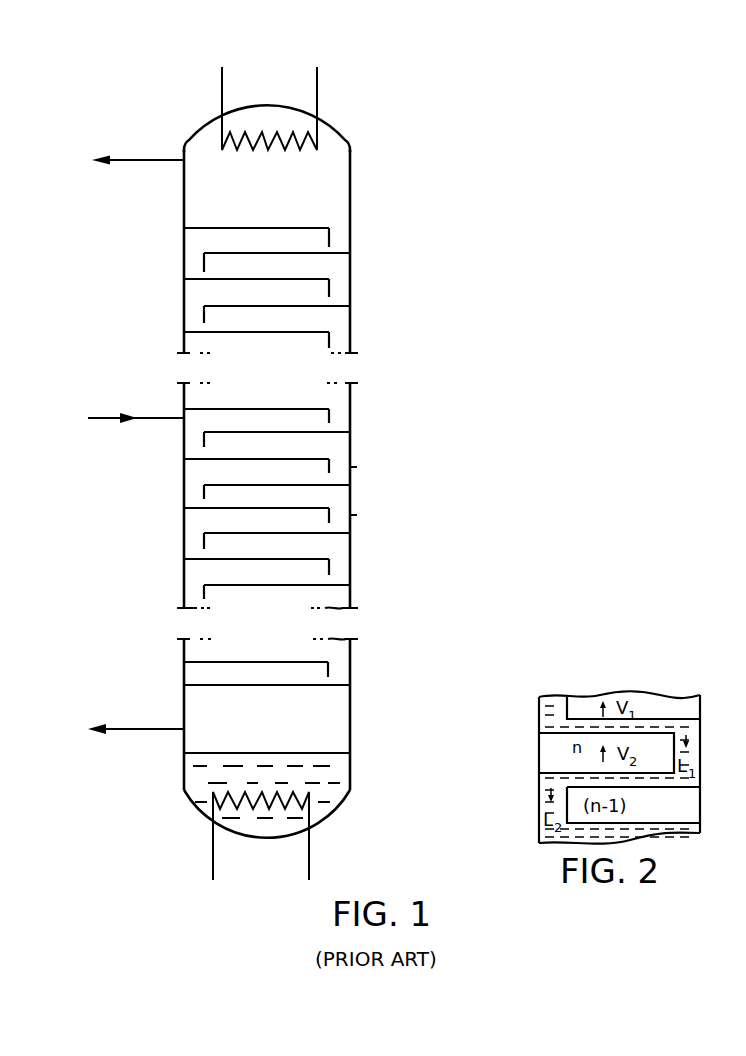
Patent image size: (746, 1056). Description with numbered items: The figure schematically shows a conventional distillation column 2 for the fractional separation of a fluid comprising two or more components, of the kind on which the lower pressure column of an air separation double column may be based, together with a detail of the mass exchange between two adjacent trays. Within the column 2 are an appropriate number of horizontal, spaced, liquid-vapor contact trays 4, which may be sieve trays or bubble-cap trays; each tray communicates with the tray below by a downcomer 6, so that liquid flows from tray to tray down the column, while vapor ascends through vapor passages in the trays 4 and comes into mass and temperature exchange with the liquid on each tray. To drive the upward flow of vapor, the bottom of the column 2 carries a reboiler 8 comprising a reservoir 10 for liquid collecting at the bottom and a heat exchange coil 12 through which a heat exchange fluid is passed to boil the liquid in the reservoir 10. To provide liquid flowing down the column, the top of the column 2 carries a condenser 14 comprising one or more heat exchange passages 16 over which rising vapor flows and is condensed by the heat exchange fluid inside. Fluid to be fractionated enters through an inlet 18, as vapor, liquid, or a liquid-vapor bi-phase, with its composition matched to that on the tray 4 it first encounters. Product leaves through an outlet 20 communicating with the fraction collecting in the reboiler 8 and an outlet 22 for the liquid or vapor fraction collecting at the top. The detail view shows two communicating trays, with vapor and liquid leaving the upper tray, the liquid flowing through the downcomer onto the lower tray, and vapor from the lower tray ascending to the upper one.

The distillation column 2 is at (140, 550).
The liquid-vapor contact trays 4 is at (228, 257).
The downcomer 6 is at (335, 285).
The reboiler 8 is at (349, 826).
The reservoir 10 is at (205, 778).
The heat exchange coil 12 is at (252, 807).
The condenser 14 is at (371, 135).
The heat exchange passages 16 is at (260, 137).
The inlet 18 is at (110, 415).
The outlet 20 is at (118, 734).
The outlet 22 is at (132, 157).